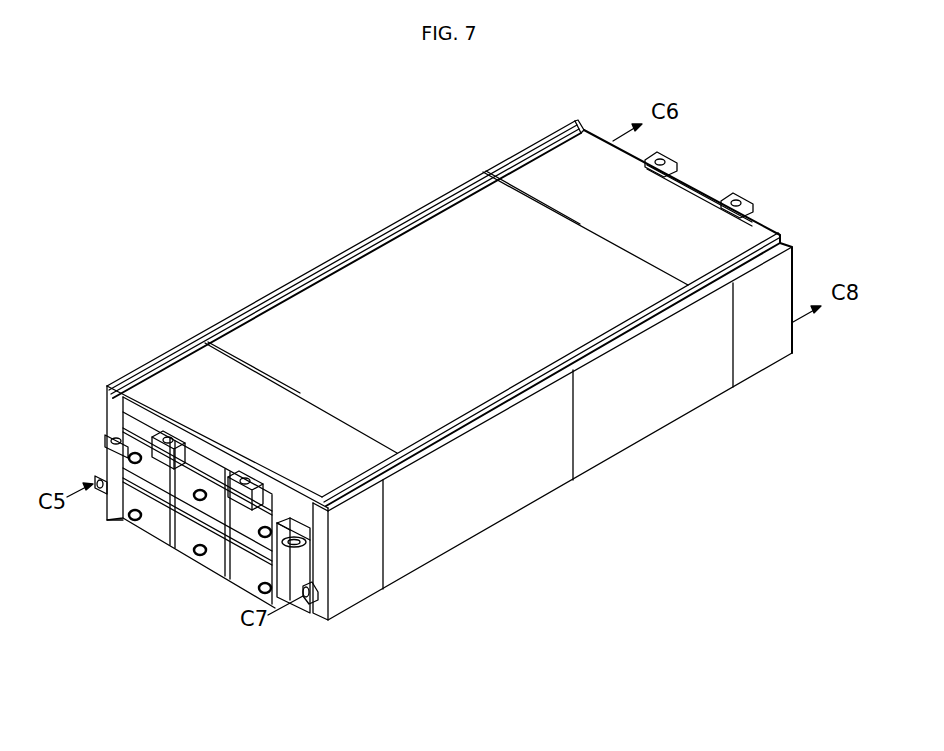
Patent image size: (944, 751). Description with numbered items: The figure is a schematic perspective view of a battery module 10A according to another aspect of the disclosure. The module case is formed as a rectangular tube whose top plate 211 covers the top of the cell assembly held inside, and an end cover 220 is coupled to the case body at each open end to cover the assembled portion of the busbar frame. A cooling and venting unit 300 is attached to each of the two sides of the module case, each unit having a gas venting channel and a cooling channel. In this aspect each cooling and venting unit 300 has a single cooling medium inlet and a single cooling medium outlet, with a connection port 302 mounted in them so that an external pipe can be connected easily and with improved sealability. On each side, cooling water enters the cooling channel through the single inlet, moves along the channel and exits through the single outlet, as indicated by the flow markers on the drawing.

The battery module 10A is at (198, 98).
The top plate 211 is at (457, 240).
The end cover 220 is at (212, 548).
The cooling and venting unit 300 is at (337, 250).
The connection port 302 is at (311, 594).